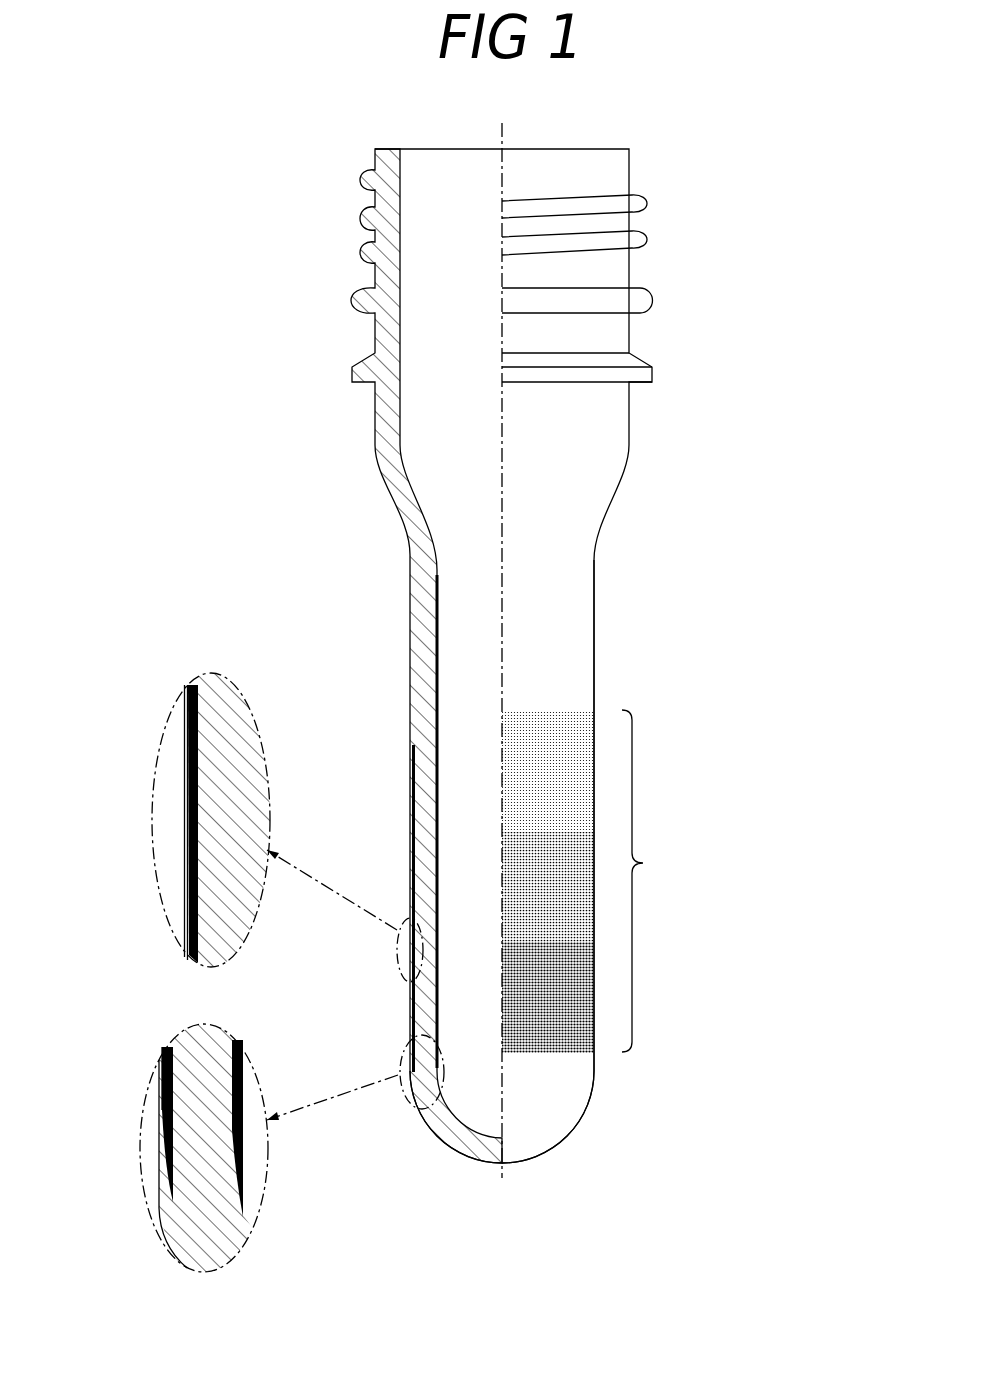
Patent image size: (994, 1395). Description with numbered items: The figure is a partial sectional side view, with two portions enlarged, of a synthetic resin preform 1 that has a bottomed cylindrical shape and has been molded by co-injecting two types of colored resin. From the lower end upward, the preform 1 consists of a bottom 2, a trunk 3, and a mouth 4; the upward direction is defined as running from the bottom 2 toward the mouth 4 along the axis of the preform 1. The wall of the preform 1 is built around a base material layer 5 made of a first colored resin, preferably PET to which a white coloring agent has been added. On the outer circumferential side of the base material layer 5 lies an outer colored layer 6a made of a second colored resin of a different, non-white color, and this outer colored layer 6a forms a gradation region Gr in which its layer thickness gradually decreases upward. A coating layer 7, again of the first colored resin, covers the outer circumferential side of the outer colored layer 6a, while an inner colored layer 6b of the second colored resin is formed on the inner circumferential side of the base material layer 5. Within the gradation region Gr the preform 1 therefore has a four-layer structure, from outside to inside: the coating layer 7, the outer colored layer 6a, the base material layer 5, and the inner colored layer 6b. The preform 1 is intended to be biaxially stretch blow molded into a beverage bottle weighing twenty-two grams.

The preform 1 is at (668, 217).
The bottom 2 is at (513, 1150).
The trunk 3 is at (577, 645).
The mouth 4 is at (610, 273).
The base material layer 5 is at (227, 753).
The outer colored layer 6a is at (190, 685).
The inner colored layer 6b is at (243, 1078).
The coating layer 7 is at (187, 737).
The gradation region Gr is at (591, 881).